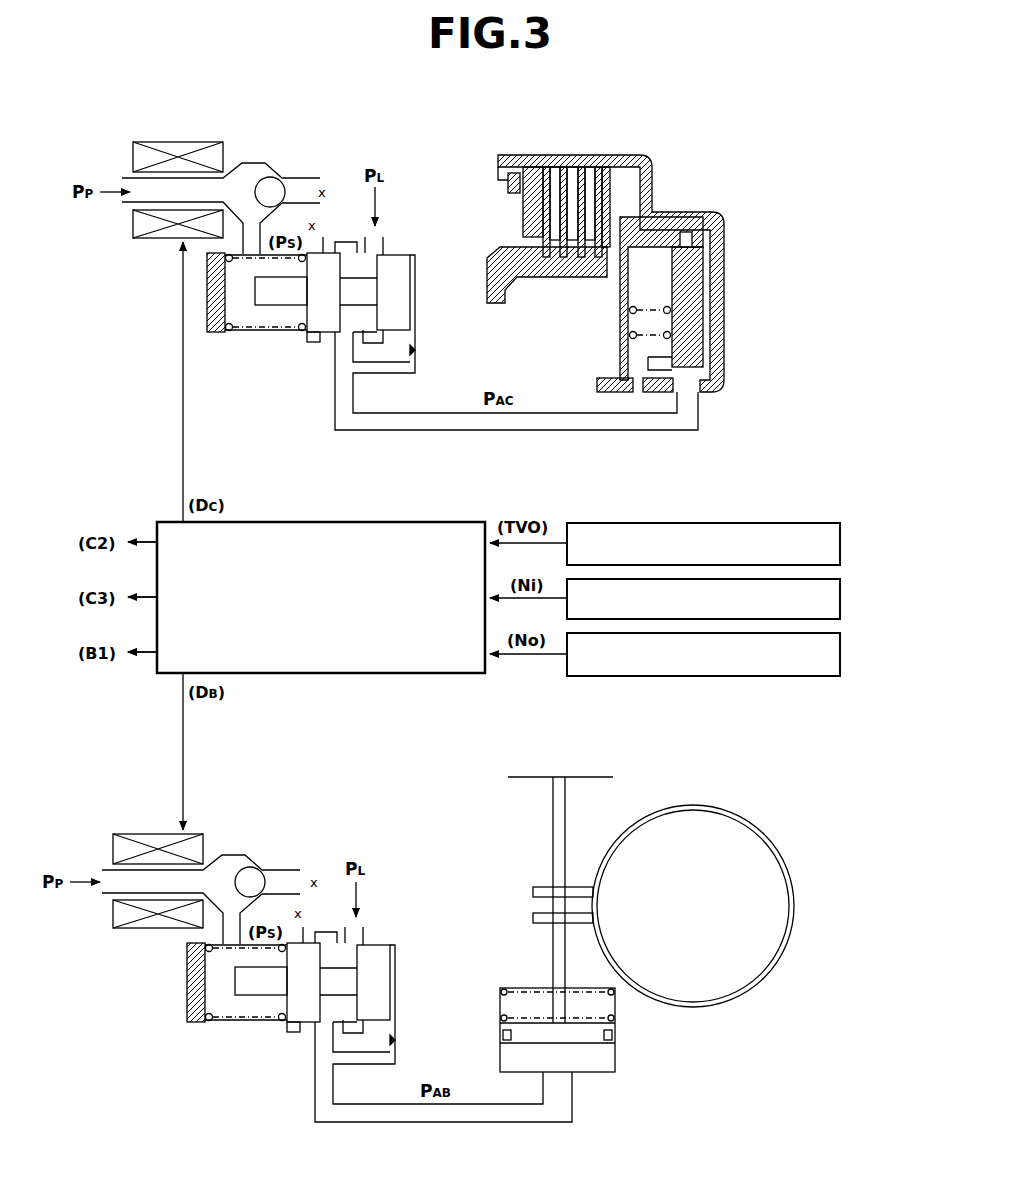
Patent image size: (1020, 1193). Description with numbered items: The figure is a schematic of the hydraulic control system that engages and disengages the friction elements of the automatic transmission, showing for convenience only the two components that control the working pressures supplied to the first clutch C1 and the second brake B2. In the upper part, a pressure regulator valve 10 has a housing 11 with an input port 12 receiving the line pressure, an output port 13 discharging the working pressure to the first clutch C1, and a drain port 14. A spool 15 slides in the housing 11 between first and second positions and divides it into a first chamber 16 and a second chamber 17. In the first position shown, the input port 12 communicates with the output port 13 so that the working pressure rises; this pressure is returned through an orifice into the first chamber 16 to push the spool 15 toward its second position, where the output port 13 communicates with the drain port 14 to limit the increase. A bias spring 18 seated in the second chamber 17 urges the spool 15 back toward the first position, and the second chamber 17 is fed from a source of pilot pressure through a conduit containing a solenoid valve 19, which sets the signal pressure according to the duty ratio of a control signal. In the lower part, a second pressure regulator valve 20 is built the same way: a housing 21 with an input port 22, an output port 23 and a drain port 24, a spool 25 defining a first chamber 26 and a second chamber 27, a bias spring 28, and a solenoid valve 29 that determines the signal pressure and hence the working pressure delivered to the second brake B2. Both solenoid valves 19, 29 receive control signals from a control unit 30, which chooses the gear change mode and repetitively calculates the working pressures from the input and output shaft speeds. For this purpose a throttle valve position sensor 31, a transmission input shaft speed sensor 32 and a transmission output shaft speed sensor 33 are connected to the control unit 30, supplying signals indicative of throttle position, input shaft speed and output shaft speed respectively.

The pressure regulator valve 10 is at (284, 338).
The housing 11 is at (236, 335).
The input port 12 is at (395, 214).
The output port 13 is at (336, 340).
The drain port 14 is at (318, 246).
The spool 15 is at (400, 262).
The first chamber 16 is at (415, 318).
The second chamber 17 is at (211, 340).
The bias spring 18 is at (256, 336).
The solenoid valve 19 is at (233, 137).
The pressure regulator valve 20 is at (258, 1033).
The housing 21 is at (208, 1024).
The input port 22 is at (363, 925).
The output port 23 is at (318, 1030).
The drain port 24 is at (300, 930).
The spool 25 is at (380, 950).
The first chamber 26 is at (397, 1020).
The second chamber 27 is at (210, 995).
The bias spring 28 is at (236, 1024).
The solenoid valve 29 is at (215, 835).
The control unit 30 is at (400, 675).
The throttle valve position sensor 31 is at (840, 548).
The transmission input shaft speed sensor 32 is at (840, 603).
The transmission output shaft speed sensor 33 is at (840, 657).
The first clutch C1 is at (668, 212).
The second brake B2 is at (771, 830).